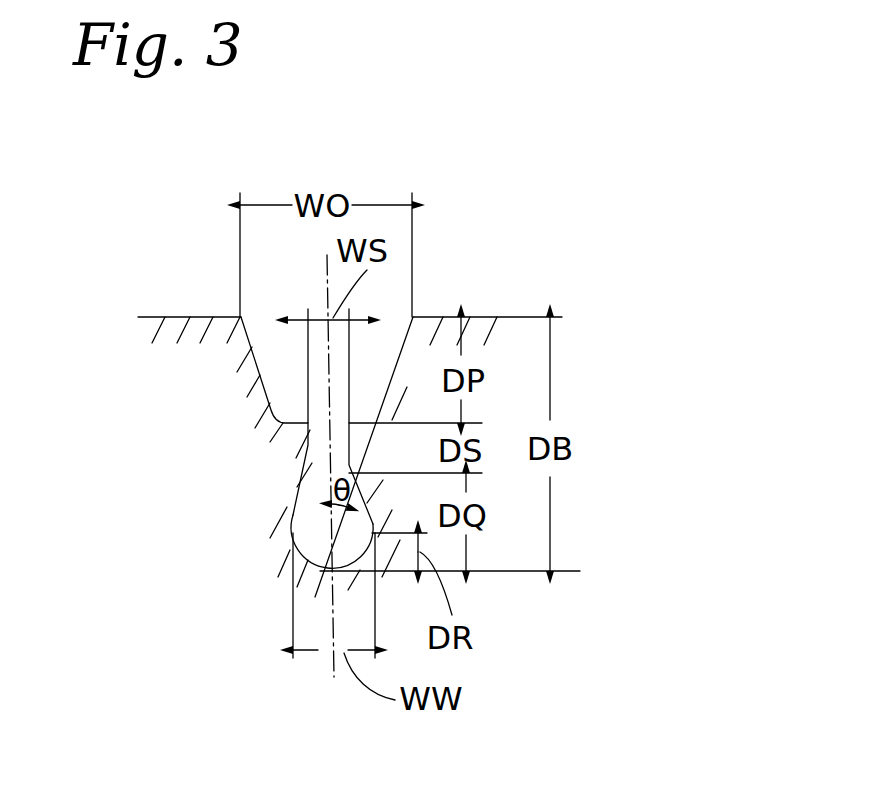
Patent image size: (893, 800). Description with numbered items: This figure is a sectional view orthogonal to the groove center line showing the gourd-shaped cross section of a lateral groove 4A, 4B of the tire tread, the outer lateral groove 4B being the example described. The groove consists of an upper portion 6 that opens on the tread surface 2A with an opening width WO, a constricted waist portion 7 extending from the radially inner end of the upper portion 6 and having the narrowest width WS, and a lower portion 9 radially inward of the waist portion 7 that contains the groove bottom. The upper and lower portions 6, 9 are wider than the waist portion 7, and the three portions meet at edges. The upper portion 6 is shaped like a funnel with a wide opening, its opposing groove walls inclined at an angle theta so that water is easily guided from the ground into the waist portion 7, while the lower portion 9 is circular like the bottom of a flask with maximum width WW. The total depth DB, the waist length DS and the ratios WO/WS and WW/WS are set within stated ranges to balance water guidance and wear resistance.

The tread surface 2A is at (453, 317).
The inner lateral groove 4A is at (149, 424).
The outer lateral groove 4B is at (275, 449).
The upper portion 6 is at (295, 395).
The constricted waist portion 7 is at (323, 448).
The lower portion 9 is at (322, 530).